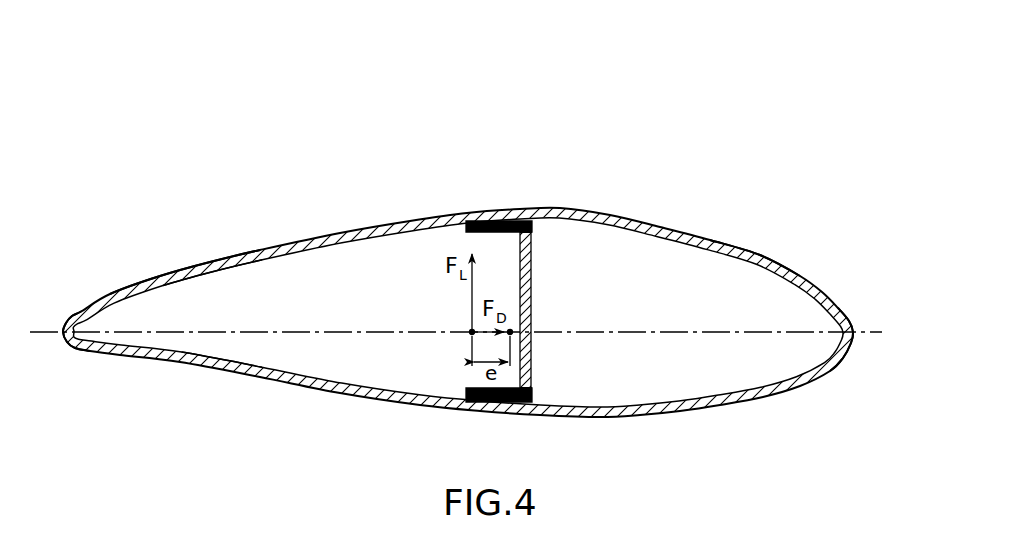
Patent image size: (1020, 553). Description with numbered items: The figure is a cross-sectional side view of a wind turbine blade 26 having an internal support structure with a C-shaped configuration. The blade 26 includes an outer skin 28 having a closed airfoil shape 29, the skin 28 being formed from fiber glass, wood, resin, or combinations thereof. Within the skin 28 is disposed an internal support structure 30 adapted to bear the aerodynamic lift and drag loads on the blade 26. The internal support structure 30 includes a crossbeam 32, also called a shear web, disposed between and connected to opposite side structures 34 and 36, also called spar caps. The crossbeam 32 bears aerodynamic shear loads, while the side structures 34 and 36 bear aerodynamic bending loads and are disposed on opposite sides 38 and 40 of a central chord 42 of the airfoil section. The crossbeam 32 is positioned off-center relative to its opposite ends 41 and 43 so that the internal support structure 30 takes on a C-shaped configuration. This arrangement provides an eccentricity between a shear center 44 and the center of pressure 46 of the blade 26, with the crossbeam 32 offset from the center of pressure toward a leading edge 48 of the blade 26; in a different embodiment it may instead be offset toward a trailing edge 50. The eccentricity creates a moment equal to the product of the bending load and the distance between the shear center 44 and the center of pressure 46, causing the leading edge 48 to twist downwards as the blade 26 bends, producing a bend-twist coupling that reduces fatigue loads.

The wind turbine blade 26 is at (706, 64).
The outer skin 28 is at (211, 264).
The closed airfoil shape 29 is at (754, 246).
The internal support structure 30 is at (519, 313).
The crossbeam 32 is at (532, 262).
The side structure 34 is at (466, 231).
The side structure 36 is at (467, 401).
The side of central chord 38 is at (224, 281).
The side of central chord 40 is at (246, 357).
The end of crossbeam 41 is at (538, 229).
The central chord 42 is at (872, 331).
The end of crossbeam 43 is at (538, 397).
The shear center 44 is at (512, 328).
The center of pressure 46 is at (472, 336).
The leading edge 48 is at (846, 375).
The trailing edge 50 is at (62, 361).